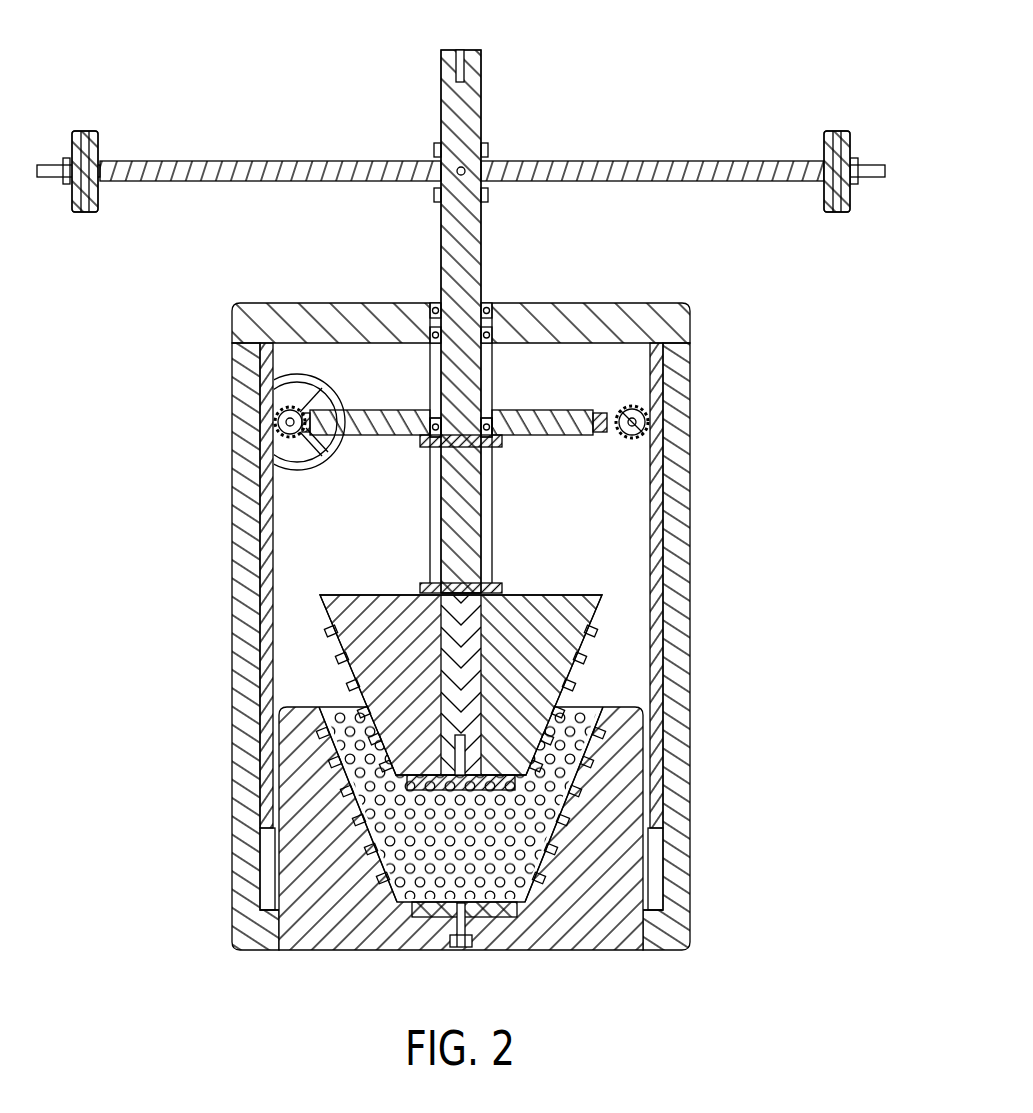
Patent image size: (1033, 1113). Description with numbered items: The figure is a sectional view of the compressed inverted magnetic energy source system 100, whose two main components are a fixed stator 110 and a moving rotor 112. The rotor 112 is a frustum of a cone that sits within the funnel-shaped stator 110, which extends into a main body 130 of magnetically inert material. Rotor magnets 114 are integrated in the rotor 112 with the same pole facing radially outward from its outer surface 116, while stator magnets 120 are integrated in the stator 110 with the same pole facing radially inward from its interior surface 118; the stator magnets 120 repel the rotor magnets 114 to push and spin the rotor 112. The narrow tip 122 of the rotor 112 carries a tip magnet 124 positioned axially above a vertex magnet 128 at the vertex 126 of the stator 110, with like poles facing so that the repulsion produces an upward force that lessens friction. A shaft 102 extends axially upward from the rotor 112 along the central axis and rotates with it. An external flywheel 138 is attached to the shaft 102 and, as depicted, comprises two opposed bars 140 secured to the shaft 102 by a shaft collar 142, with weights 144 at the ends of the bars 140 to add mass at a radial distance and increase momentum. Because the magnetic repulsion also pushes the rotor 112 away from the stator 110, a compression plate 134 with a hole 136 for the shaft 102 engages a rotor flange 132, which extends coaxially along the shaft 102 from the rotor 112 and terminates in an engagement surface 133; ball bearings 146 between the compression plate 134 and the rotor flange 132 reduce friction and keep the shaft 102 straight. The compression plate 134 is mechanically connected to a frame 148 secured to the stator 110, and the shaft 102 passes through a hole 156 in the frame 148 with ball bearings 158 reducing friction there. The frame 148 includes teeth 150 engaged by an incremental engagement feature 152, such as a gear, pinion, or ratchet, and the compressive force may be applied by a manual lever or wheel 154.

The system 100 is at (132, 38).
The shaft 102 is at (477, 72).
The stator 110 is at (635, 753).
The rotor 112 is at (376, 613).
The rotor magnets 114 is at (585, 669).
The outer surface 116 is at (348, 658).
The interior surface 118 is at (372, 735).
The stator magnets 120 is at (604, 732).
The tip 122 is at (425, 797).
The tip magnet 124 is at (455, 773).
The vertex 126 is at (487, 918).
The vertex magnet 128 is at (449, 922).
The main body 130 is at (622, 828).
The rotor flange 132 is at (486, 516).
The engagement surface 133 is at (466, 450).
The compression plate 134 is at (362, 433).
The hole 136 is at (434, 412).
The external flywheel 138 is at (207, 157).
The opposed bars 140 is at (273, 160).
The shaft collar 142 is at (487, 143).
The weights 144 is at (79, 137).
The ball bearings 146 is at (432, 425).
The frame 148 is at (668, 927).
The teeth 150 is at (661, 477).
The incremental engagement feature 152 is at (638, 413).
The manual lever or wheel 154 is at (296, 380).
The hole 156 is at (437, 303).
The ball bearings 158 is at (487, 303).